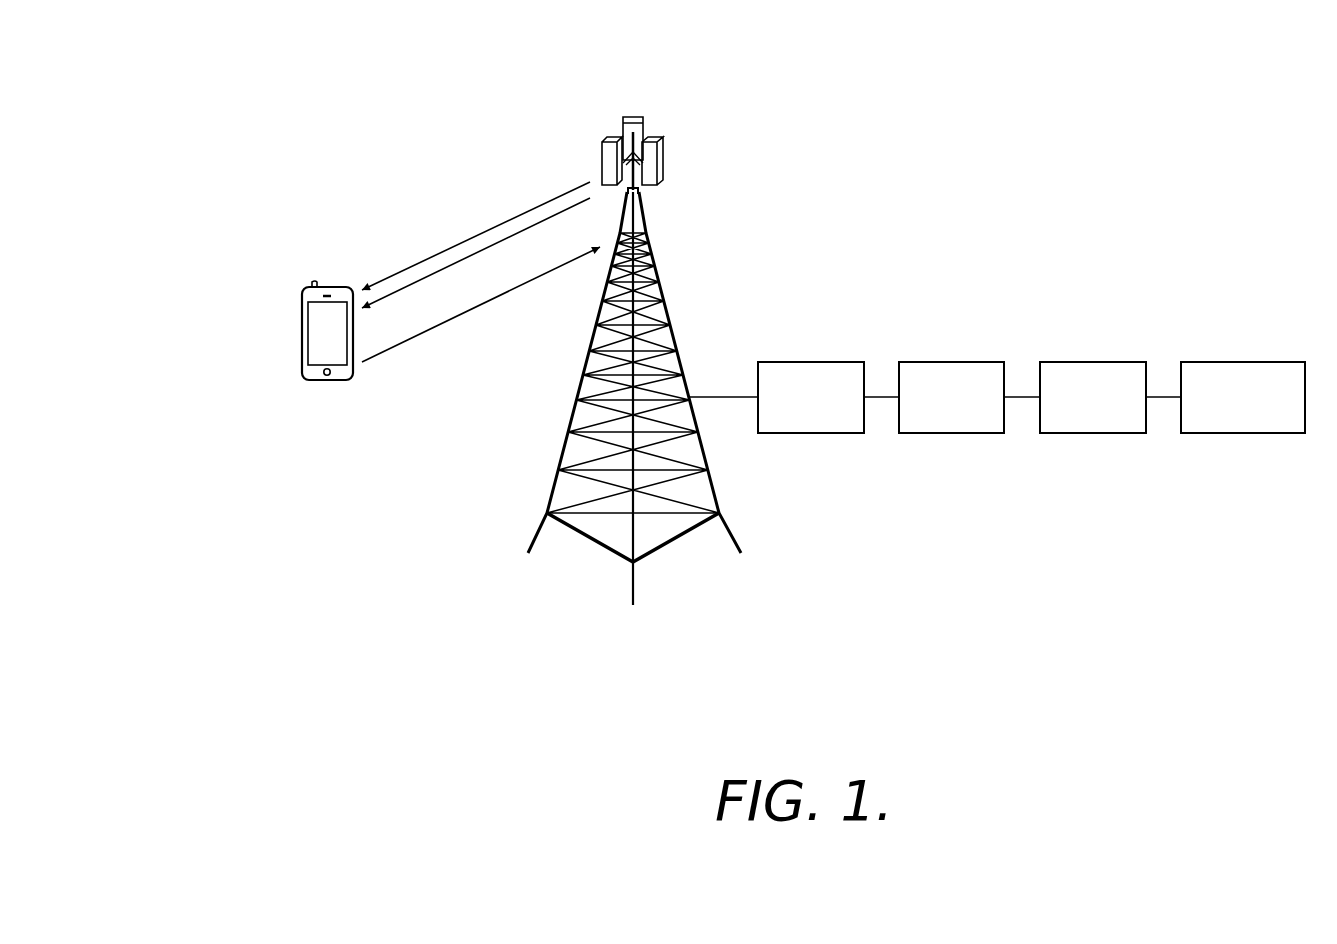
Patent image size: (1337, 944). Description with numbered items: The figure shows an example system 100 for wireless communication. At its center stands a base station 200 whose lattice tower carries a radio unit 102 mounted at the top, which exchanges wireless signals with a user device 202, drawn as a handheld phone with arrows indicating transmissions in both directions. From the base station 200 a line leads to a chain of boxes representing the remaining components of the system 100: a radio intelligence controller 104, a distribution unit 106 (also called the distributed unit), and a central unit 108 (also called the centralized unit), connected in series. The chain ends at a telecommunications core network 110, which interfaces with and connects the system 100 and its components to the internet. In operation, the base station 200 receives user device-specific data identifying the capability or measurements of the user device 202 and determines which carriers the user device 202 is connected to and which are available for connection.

The system 100 is at (210, 147).
The radio unit 102 is at (683, 139).
The base station 200 is at (576, 410).
The user device 202 is at (327, 385).
The radio intelligence controller 104 is at (834, 362).
The distribution unit 106 is at (976, 362).
The central unit 108 is at (1117, 362).
The telecommunications core network 110 is at (1275, 362).